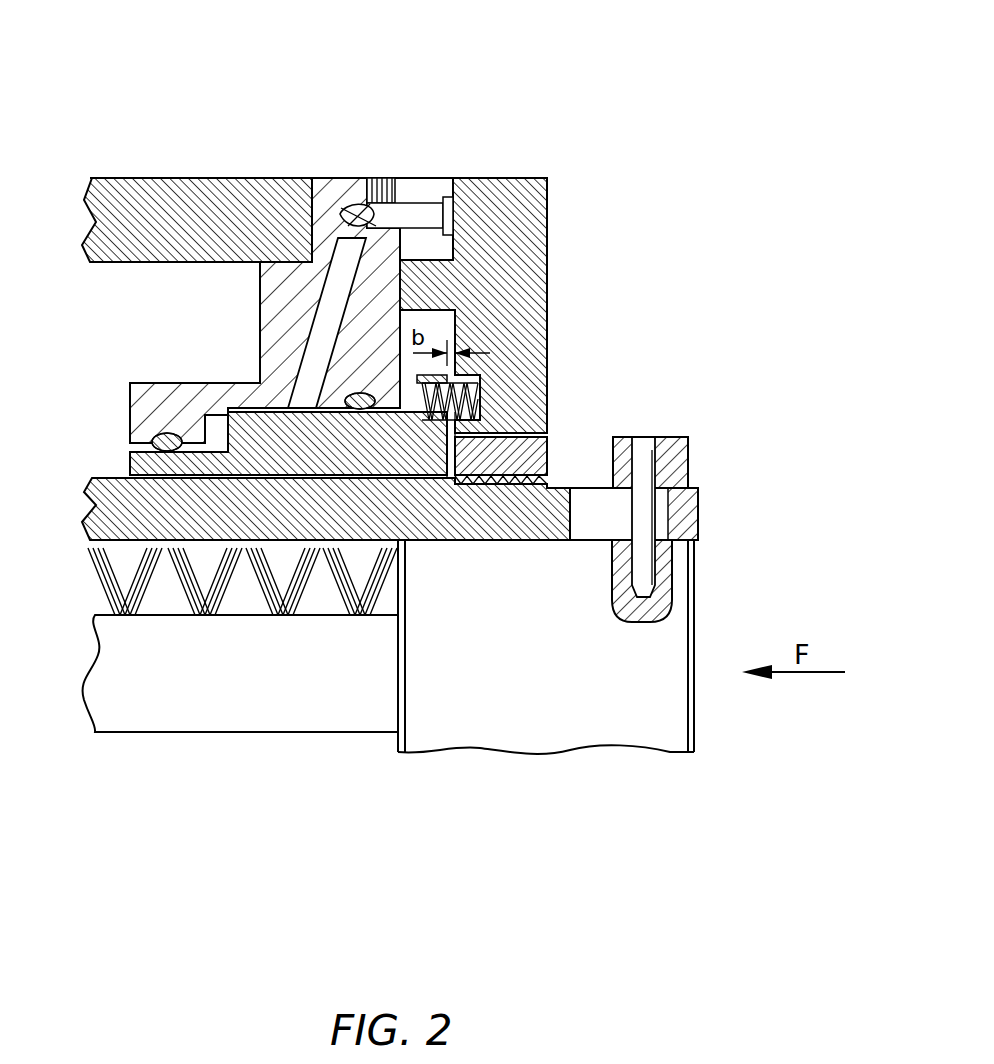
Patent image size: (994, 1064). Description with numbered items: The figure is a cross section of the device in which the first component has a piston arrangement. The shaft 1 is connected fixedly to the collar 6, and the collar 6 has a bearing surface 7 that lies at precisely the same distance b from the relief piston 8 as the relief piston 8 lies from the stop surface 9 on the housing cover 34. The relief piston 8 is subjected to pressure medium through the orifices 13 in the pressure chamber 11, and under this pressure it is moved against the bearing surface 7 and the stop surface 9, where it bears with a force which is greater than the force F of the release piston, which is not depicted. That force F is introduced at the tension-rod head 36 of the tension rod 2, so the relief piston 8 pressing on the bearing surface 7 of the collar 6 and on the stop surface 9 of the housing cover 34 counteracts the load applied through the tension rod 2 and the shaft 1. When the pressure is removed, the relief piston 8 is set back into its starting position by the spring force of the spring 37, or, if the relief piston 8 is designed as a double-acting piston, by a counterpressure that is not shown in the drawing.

The shaft 1 is at (328, 512).
The tension rod 2 is at (177, 705).
The collar 6 is at (547, 450).
The bearing surface 7 is at (460, 448).
The relief piston 8 is at (397, 423).
The stop surface 9 is at (465, 437).
The pressure chamber 11 is at (203, 432).
The orifices 13 is at (362, 232).
The housing cover 34 is at (547, 238).
The tension-rod head 36 is at (693, 588).
The spring 37 is at (480, 425).